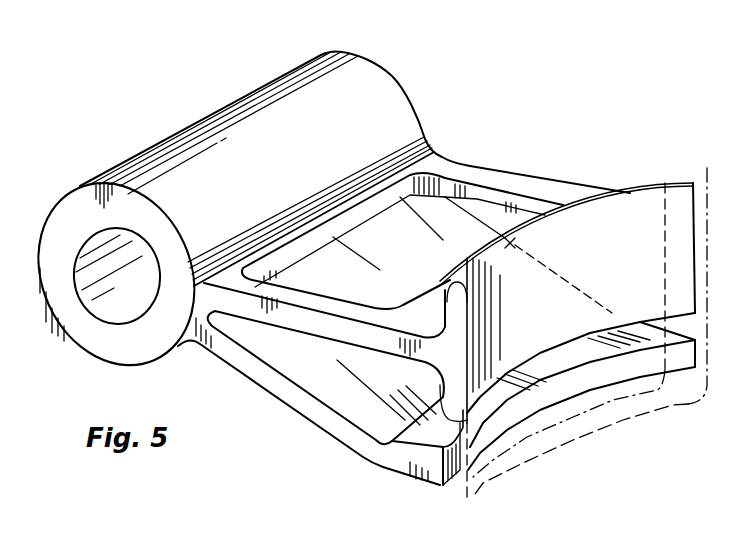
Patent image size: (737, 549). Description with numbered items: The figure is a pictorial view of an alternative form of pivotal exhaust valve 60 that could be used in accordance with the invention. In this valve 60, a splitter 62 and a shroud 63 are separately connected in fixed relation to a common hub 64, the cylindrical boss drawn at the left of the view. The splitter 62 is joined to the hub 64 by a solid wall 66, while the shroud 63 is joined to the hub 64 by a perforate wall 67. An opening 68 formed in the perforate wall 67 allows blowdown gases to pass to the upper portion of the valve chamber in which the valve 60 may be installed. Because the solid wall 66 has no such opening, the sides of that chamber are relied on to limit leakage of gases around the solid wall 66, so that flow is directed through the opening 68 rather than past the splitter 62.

The exhaust valve 60 is at (462, 155).
The splitter 62 is at (367, 444).
The shroud 63 is at (607, 214).
The common hub 64 is at (103, 347).
The solid wall 66 is at (323, 393).
The perforate wall 67 is at (521, 183).
The opening 68 is at (496, 189).